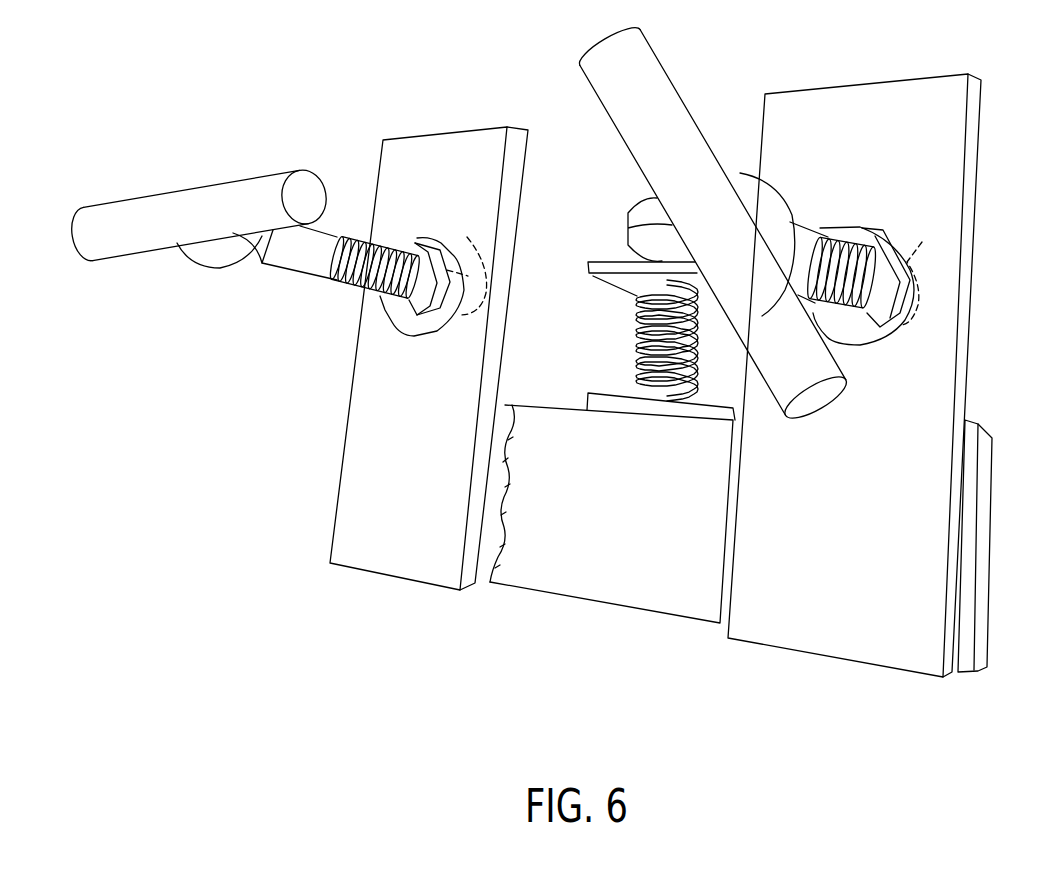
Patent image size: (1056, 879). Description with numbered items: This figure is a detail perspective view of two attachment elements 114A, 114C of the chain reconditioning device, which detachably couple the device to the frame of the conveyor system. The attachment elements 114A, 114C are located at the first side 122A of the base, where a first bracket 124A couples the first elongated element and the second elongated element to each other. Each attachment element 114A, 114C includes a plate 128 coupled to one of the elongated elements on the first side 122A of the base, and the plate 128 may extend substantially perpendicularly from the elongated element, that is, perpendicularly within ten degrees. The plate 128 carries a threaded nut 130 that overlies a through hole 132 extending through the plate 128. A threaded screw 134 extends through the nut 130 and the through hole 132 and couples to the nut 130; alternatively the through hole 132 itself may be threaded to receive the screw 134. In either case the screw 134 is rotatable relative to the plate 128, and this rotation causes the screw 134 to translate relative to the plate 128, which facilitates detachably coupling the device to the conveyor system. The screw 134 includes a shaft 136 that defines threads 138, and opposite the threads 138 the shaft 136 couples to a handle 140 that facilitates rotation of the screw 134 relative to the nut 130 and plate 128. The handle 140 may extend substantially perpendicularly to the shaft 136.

The attachment element 114A is at (220, 195).
The attachment element 114C is at (672, 103).
The first side of the base 122A is at (458, 631).
The first bracket 124A is at (587, 600).
The plate 128 is at (352, 498).
The threaded nut 130 is at (417, 243).
The through hole 132 is at (691, 266).
The threaded screw 134 is at (285, 263).
The shaft 136 is at (352, 247).
The threads 138 is at (373, 300).
The handle 140 is at (180, 243).